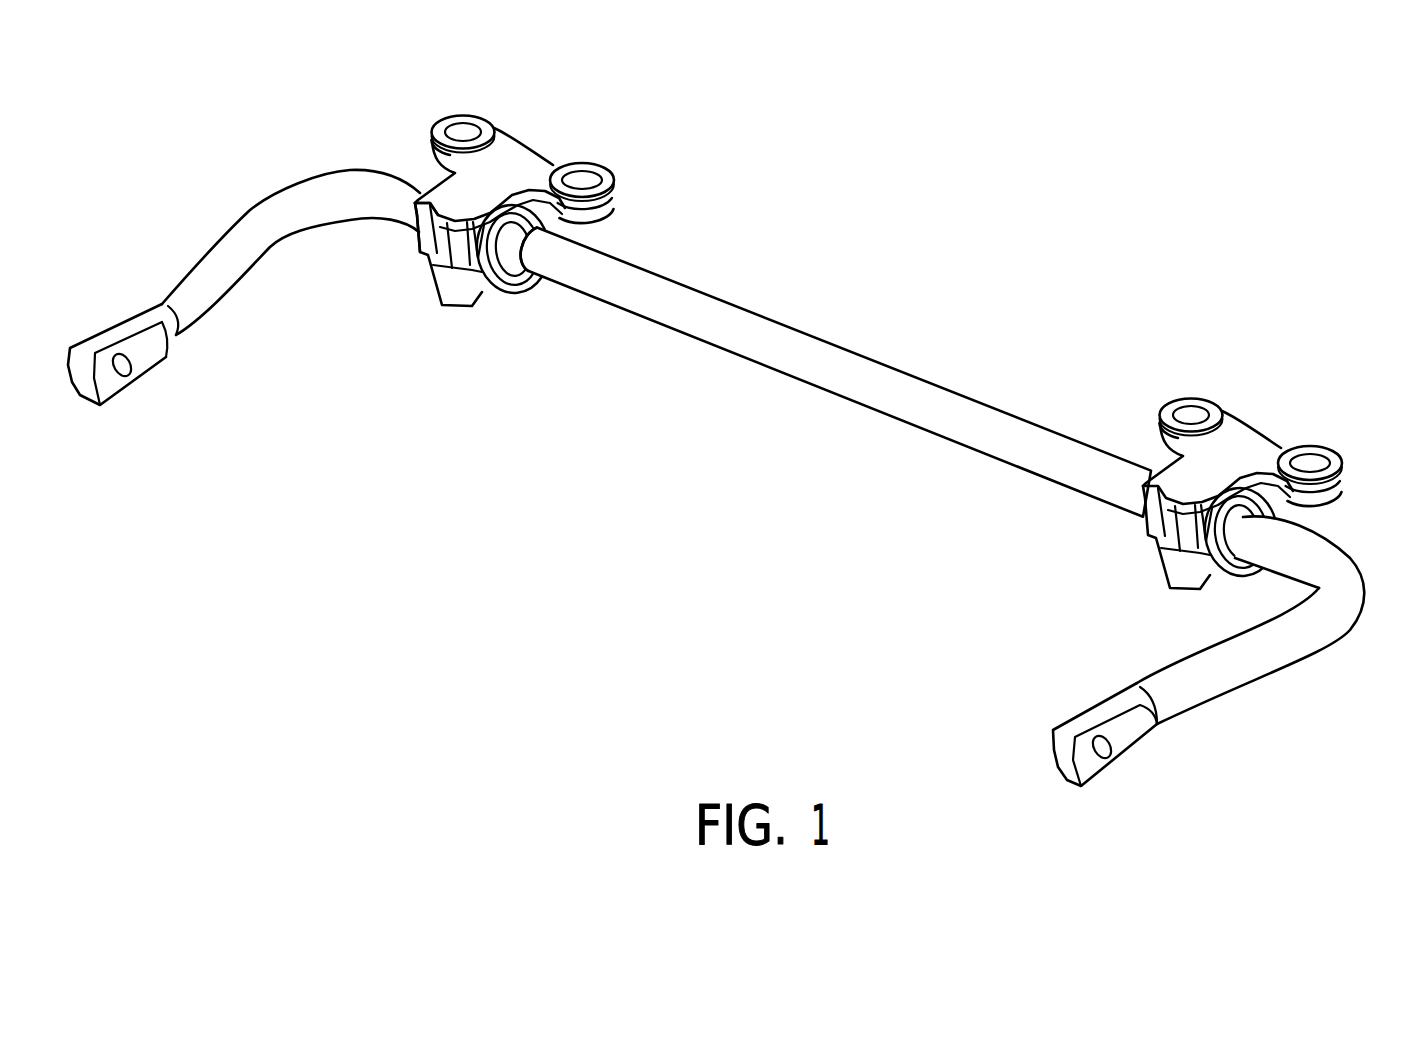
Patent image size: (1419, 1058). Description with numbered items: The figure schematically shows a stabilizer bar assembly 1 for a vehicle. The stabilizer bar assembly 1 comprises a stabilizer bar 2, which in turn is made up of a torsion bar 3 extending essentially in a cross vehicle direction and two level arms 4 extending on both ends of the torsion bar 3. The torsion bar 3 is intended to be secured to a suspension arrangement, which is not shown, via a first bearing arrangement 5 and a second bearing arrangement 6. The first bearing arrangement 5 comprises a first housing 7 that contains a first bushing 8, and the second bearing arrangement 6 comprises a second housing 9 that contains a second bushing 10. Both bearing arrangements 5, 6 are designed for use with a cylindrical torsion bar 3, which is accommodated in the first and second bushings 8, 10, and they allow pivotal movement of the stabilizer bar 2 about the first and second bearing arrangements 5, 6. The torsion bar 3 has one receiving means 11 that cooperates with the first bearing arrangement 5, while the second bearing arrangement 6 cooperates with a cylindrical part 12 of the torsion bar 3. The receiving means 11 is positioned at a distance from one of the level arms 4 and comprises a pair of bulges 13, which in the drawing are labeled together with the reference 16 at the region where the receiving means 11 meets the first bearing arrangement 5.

The stabilizer bar assembly 1 is at (740, 466).
The stabilizer bar 2 is at (836, 372).
The torsion bar 3 is at (848, 347).
The level arms 4 is at (208, 303).
The first bearing arrangement 5 is at (388, 273).
The second bearing arrangement 6 is at (1202, 590).
The first housing 7 is at (497, 282).
The first bushing 8 is at (517, 284).
The second housing 9 is at (1237, 552).
The second bushing 10 is at (1250, 550).
The receiving means 11 is at (403, 240).
The cylindrical part 12 is at (1258, 522).
The bulges 13 is at (403, 200).
The weld seam 16 is at (535, 277).